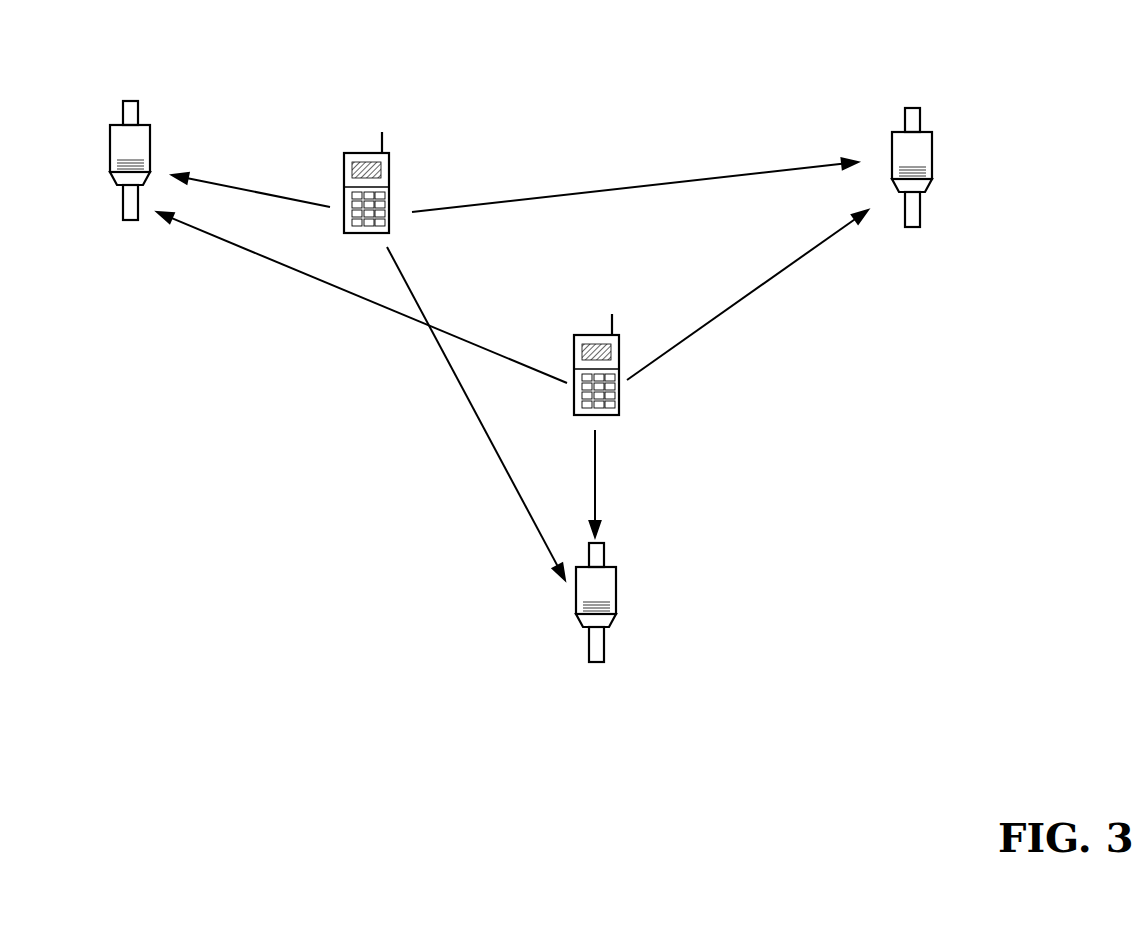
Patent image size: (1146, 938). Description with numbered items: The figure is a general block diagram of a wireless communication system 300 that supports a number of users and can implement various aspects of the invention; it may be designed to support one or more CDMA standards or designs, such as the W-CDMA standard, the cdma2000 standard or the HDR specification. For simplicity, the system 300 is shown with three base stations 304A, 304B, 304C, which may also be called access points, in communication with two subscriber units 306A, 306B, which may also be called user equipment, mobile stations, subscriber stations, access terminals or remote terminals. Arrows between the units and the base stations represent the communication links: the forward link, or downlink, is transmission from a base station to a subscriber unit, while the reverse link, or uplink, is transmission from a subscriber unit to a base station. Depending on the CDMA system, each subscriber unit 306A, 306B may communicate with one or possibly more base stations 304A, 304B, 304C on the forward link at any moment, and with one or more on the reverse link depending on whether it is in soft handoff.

The wireless communication system 300 is at (1010, 48).
The base station 304A is at (150, 140).
The base station 304B is at (932, 146).
The base station 304C is at (616, 580).
The subscriber unit 306A is at (389, 170).
The subscriber unit 306B is at (619, 405).